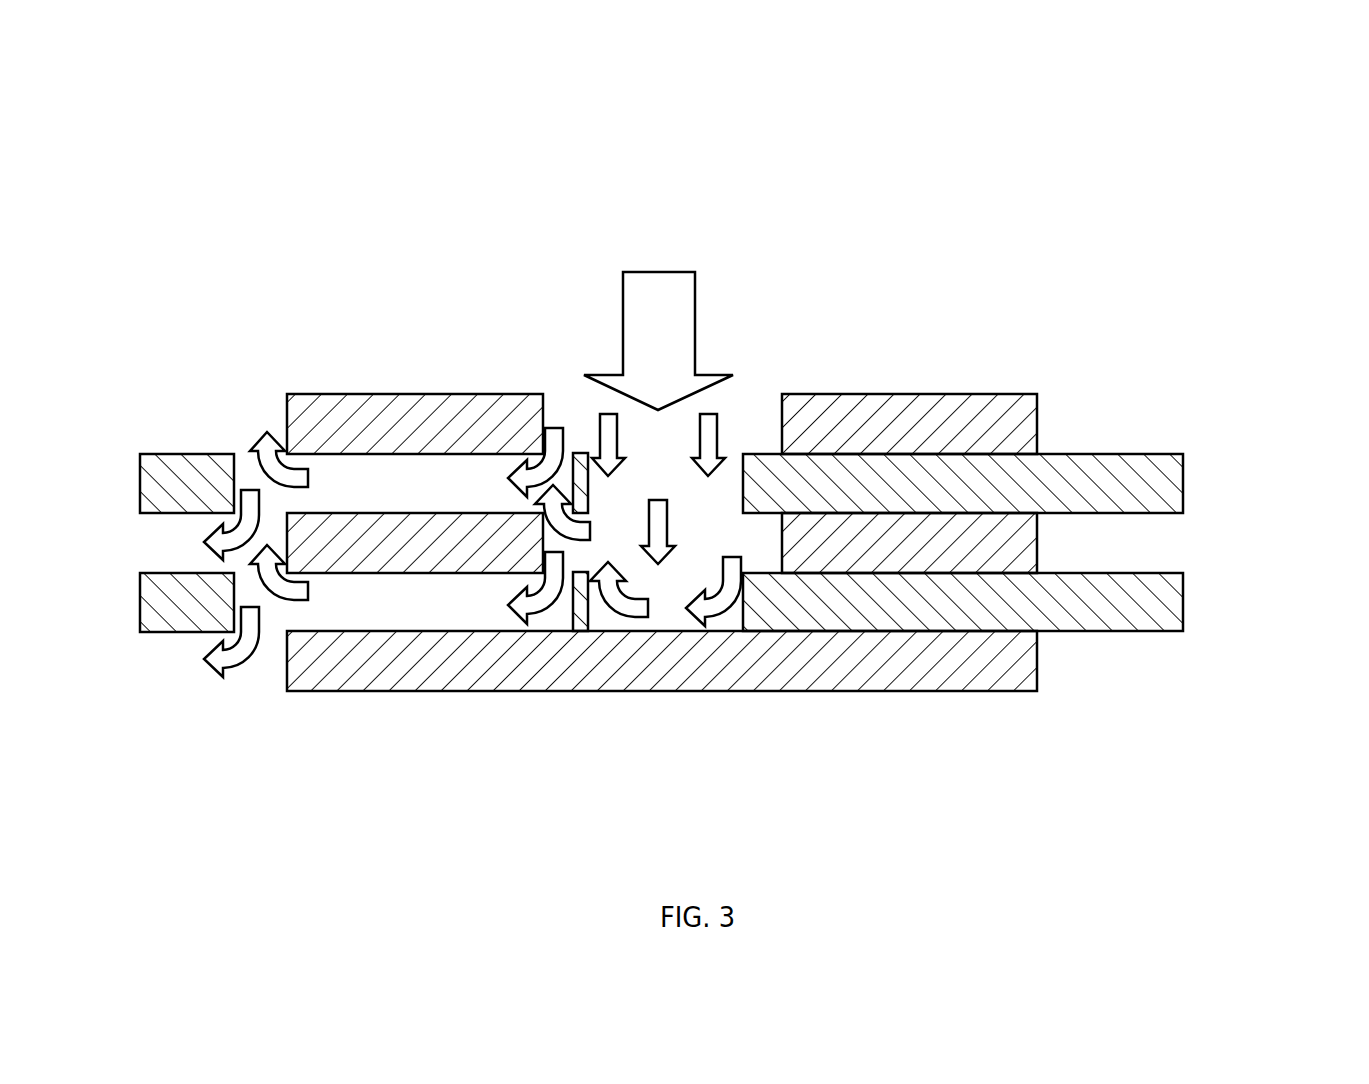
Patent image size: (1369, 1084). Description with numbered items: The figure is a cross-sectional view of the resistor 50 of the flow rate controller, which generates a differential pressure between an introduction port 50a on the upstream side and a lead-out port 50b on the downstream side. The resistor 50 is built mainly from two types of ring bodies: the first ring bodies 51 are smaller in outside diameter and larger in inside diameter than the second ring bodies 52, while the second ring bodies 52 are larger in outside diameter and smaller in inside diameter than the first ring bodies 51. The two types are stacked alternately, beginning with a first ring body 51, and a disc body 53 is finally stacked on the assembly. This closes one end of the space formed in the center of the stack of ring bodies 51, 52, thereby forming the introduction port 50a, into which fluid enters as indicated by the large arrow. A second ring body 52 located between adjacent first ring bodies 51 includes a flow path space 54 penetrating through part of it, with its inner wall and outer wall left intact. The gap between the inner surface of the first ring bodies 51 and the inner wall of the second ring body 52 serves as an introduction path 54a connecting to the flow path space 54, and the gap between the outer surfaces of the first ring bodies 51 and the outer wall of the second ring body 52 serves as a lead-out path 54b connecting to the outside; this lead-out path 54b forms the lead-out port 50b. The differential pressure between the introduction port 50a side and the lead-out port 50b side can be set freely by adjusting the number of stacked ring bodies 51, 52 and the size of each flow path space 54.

The resistor 50 is at (983, 192).
The introduction port 50a is at (735, 397).
The lead-out port 50b is at (162, 410).
The first ring body 51 is at (1022, 425).
The second ring body 52 is at (1168, 483).
The disc body 53 is at (1022, 662).
The flow path space 54 is at (408, 491).
The introduction path 54a is at (568, 453).
The lead-out path 54b is at (241, 453).